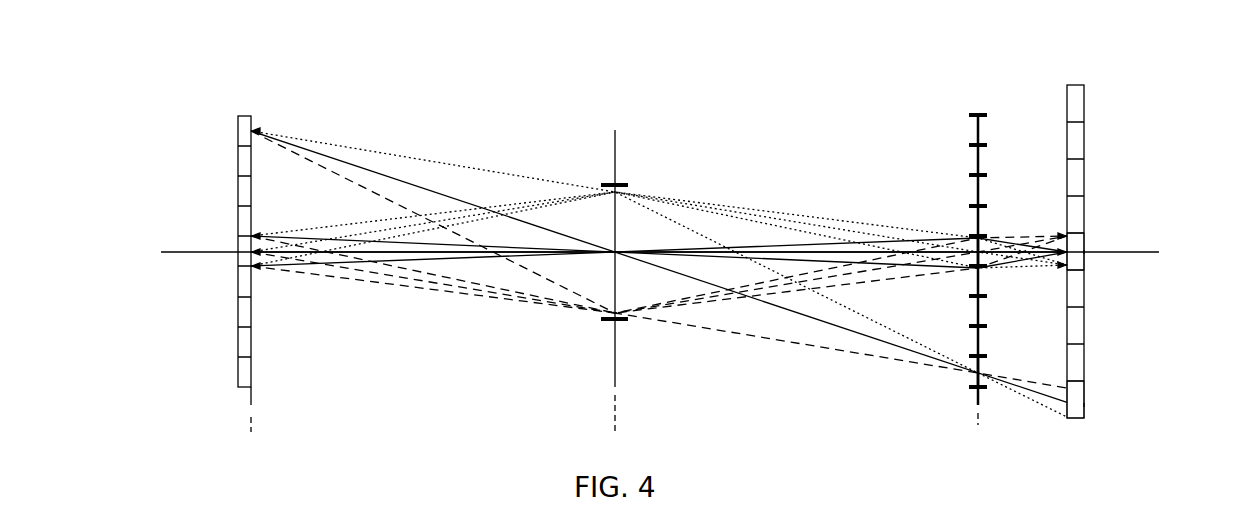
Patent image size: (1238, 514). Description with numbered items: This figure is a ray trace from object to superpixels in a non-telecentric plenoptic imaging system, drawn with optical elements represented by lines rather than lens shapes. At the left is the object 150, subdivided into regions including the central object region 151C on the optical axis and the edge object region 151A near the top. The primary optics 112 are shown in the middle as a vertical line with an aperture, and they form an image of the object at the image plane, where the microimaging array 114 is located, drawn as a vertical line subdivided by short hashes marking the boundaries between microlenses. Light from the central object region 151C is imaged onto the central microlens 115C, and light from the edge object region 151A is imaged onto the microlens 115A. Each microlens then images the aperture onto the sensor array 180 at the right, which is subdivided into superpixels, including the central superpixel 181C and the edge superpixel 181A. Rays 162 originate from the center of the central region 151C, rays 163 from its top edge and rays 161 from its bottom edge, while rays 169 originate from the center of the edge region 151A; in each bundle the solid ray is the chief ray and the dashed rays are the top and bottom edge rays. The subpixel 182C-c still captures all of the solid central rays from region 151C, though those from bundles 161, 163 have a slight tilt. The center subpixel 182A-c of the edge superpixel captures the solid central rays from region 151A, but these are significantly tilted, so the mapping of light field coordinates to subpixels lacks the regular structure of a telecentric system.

The object 150 is at (258, 110).
The edge object region 151A is at (240, 133).
The central object region 151C is at (243, 250).
The ray bundle from edge region 169 is at (252, 131).
The rays from top edge of central region 163 is at (257, 237).
The rays from center of central region 162 is at (259, 268).
The rays from bottom edge of central region 161 is at (259, 254).
The primary optics 112 is at (673, 173).
The microimaging array 114 is at (990, 105).
The central microlens 115C is at (985, 237).
The edge microlens 115A is at (985, 367).
The sensor array 180 is at (1090, 76).
The central superpixel 181C is at (1077, 243).
The central subpixel of central superpixel 182C-c is at (1083, 252).
The edge superpixel 181A is at (1077, 392).
The center subpixel of edge superpixel 182A-c is at (1083, 405).